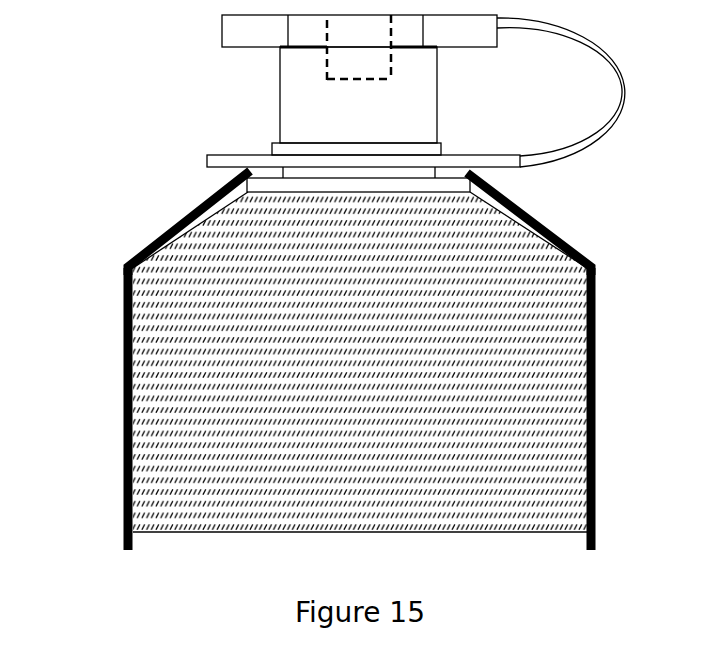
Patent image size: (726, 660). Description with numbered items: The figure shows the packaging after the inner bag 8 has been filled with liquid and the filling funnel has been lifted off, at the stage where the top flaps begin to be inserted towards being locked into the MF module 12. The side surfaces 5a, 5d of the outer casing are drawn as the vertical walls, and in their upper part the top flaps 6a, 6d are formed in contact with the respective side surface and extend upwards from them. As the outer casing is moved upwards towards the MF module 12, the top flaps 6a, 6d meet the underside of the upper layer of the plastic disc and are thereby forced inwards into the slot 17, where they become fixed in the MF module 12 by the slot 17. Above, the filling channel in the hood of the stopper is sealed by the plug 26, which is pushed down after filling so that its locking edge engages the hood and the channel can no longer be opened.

The MF module 12 is at (167, 102).
The plug 26 is at (327, 62).
The slot 17 is at (204, 173).
The top flap 6a is at (167, 223).
The top flap 6d is at (538, 213).
The side surface 5a is at (124, 400).
The side surface 5d is at (597, 396).
The inner bag 8 is at (368, 394).